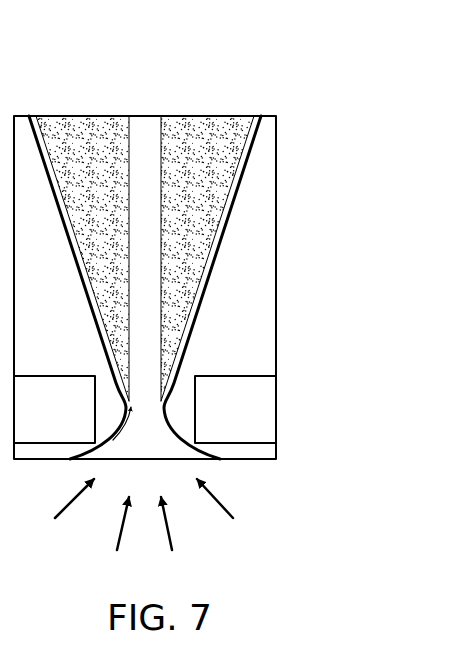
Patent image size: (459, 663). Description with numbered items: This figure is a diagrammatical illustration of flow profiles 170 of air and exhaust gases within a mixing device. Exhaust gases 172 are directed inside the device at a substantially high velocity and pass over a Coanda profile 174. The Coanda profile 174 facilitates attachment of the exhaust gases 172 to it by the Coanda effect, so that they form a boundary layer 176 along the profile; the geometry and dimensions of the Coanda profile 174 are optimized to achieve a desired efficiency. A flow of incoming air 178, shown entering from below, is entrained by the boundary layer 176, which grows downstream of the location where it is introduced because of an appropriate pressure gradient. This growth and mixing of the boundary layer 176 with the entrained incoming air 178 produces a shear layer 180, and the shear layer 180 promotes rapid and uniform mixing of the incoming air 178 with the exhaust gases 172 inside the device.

The flow profiles 170 is at (288, 45).
The exhaust gases 172 is at (117, 424).
The Coanda profile 174 is at (163, 415).
The boundary layer 176 is at (209, 275).
The incoming air 178 is at (217, 503).
The shear layer 180 is at (95, 250).